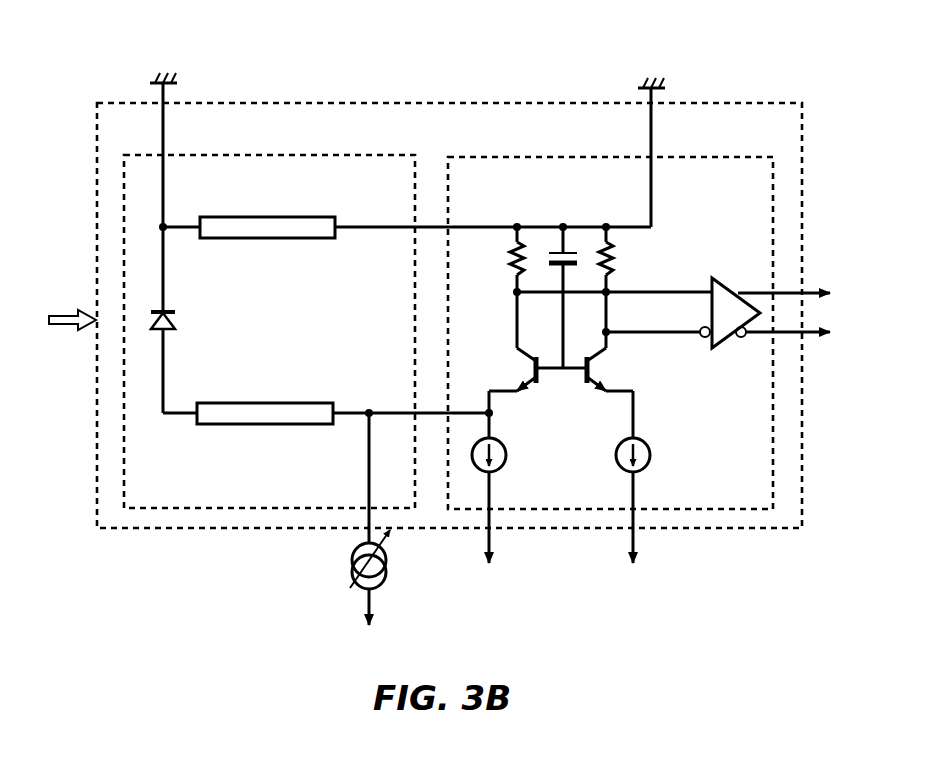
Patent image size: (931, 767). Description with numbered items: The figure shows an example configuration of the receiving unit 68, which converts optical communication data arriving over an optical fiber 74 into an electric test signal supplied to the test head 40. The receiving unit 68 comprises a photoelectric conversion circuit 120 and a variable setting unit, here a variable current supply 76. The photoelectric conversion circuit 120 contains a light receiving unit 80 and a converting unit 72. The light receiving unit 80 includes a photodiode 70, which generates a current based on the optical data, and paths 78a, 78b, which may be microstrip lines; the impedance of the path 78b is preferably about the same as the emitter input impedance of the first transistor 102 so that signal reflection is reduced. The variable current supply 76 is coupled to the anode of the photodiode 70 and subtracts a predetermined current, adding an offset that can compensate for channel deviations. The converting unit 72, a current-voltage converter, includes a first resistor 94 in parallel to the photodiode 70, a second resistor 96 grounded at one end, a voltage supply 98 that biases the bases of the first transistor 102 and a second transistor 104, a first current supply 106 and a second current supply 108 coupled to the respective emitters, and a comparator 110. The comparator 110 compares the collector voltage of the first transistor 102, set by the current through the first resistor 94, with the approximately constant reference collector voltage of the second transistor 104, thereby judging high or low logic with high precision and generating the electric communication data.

The test head 40 is at (799, 312).
The receiving unit 68 is at (850, 78).
The photodiode 70 is at (176, 320).
The converting unit 72 is at (722, 157).
The optical fiber 74 is at (55, 322).
The variable current supply 76 is at (352, 574).
The path 78a is at (272, 217).
The path 78b is at (270, 403).
The light receiving unit 80 is at (333, 155).
The first resistor 94 is at (510, 260).
The second resistor 96 is at (614, 260).
The voltage supply 98 is at (577, 250).
The first transistor 102 is at (512, 371).
The second transistor 104 is at (604, 372).
The first current supply 106 is at (507, 455).
The second current supply 108 is at (651, 455).
The comparator 110 is at (716, 279).
The photoelectric conversion circuit 120 is at (450, 103).